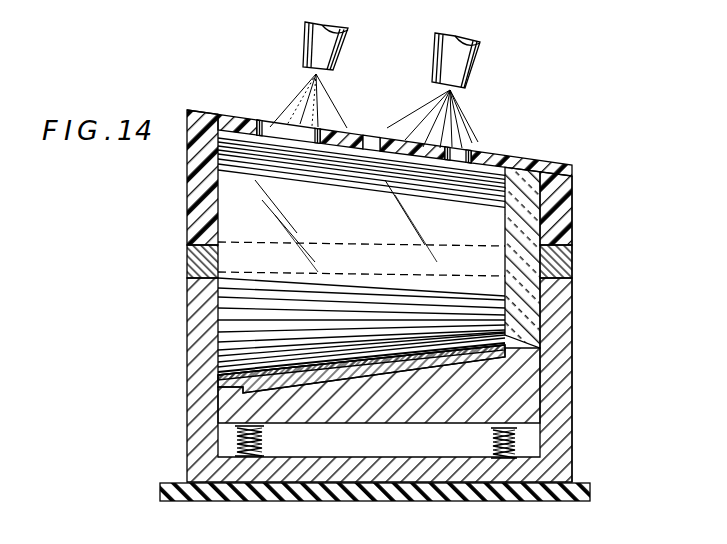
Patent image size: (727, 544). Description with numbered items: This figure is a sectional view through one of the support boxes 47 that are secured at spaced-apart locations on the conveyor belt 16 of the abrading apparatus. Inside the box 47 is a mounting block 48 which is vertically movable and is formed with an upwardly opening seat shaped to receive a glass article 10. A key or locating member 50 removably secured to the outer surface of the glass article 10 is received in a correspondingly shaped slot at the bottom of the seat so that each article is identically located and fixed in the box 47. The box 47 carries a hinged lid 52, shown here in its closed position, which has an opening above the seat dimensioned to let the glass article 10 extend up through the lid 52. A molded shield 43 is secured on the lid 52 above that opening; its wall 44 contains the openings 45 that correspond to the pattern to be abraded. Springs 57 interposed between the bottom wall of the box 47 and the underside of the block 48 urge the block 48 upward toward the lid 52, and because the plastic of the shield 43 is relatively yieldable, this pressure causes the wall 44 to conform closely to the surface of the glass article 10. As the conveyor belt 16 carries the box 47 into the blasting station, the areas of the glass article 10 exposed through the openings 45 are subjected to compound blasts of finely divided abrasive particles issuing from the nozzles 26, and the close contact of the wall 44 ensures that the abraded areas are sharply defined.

The glass article 10 is at (490, 173).
The conveyor belt 16 is at (425, 505).
The nozzles 26 is at (341, 51).
The shield 43 is at (573, 166).
The wall 44 is at (363, 134).
The openings 45 is at (266, 128).
The support box 47 is at (563, 338).
The mounting block 48 is at (527, 402).
The locating member 50 is at (493, 360).
The lid 52 is at (574, 265).
The springs 57 is at (263, 438).